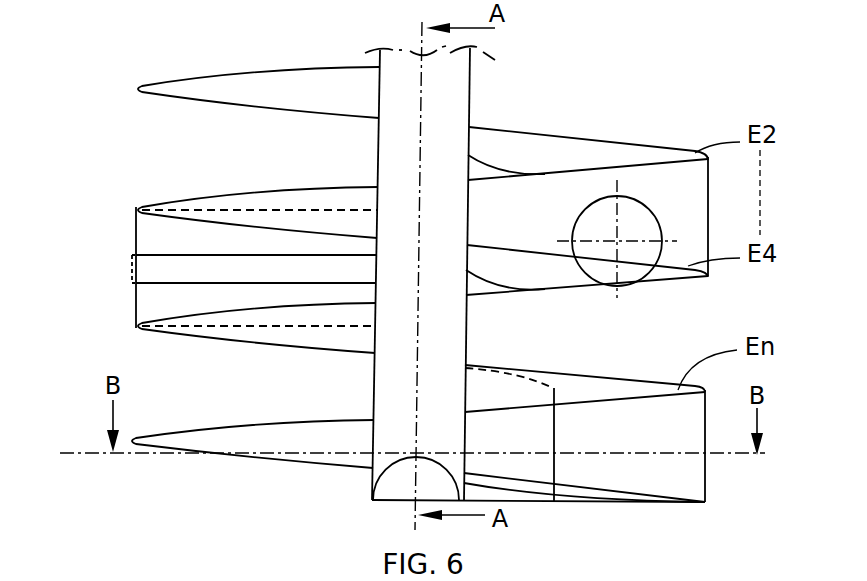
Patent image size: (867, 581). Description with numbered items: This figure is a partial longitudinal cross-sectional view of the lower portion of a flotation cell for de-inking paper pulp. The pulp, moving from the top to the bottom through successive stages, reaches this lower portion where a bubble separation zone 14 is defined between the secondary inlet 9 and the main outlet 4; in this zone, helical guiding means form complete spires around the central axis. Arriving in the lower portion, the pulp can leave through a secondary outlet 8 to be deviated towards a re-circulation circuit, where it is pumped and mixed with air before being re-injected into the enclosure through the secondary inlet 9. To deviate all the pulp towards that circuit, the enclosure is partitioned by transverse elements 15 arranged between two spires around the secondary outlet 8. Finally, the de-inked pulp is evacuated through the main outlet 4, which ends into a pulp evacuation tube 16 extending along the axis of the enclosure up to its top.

The main outlet 4 is at (395, 484).
The secondary outlet 8 is at (642, 217).
The secondary inlet 9 is at (155, 267).
The bubble separation zone 14 is at (188, 351).
The transverse elements 15 is at (570, 193).
The pulp evacuation tube 16 is at (457, 108).